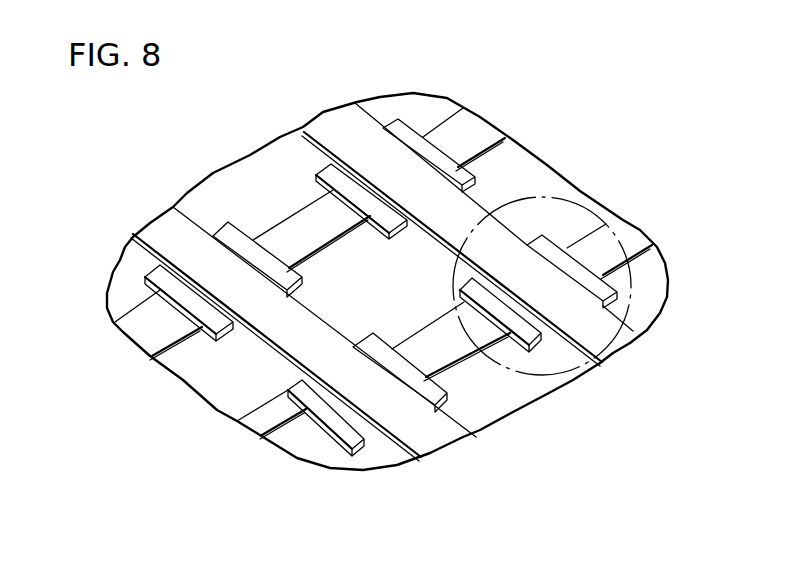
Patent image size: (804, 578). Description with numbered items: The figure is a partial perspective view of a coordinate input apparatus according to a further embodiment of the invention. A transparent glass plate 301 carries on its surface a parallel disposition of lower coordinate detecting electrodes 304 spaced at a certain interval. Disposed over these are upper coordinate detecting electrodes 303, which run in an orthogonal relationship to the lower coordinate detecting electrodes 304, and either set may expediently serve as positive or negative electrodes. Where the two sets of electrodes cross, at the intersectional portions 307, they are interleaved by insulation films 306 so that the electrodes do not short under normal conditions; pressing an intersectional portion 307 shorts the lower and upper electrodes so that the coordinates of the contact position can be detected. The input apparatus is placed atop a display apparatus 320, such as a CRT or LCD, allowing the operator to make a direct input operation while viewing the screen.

The display apparatus 320 is at (504, 119).
The glass plate 301 is at (507, 393).
The upper coordinate detecting electrodes 303 is at (398, 448).
The lower coordinate detecting electrodes 304 is at (270, 419).
The insulation films 306 is at (351, 447).
The intersectional portions 307 is at (567, 183).